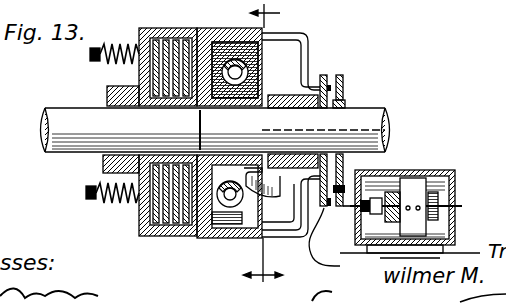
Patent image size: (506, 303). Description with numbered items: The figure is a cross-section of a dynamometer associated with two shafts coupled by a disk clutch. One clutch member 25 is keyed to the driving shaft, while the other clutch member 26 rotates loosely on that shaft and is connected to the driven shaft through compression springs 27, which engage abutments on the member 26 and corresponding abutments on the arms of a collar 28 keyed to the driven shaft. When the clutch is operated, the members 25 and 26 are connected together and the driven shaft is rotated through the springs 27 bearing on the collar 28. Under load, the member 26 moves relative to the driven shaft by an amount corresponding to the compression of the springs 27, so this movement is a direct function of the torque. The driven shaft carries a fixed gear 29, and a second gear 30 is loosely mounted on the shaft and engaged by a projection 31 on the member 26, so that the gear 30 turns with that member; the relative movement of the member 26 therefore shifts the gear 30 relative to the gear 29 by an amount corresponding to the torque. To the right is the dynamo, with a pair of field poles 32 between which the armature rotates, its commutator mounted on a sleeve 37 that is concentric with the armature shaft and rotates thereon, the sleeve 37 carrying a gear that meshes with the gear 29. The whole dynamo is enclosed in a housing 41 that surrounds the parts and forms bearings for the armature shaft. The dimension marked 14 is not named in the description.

The shaft 14 is at (274, 153).
The clutch member 25 is at (148, 28).
The clutch member 26 is at (224, 22).
The compression springs 27 is at (234, 205).
The collar 28 is at (291, 96).
The gear 29 is at (342, 86).
The second gear 30 is at (324, 79).
The projection 31 is at (306, 49).
The field poles 32 is at (272, 217).
The sleeve 37 is at (333, 246).
The housing 41 is at (447, 174).